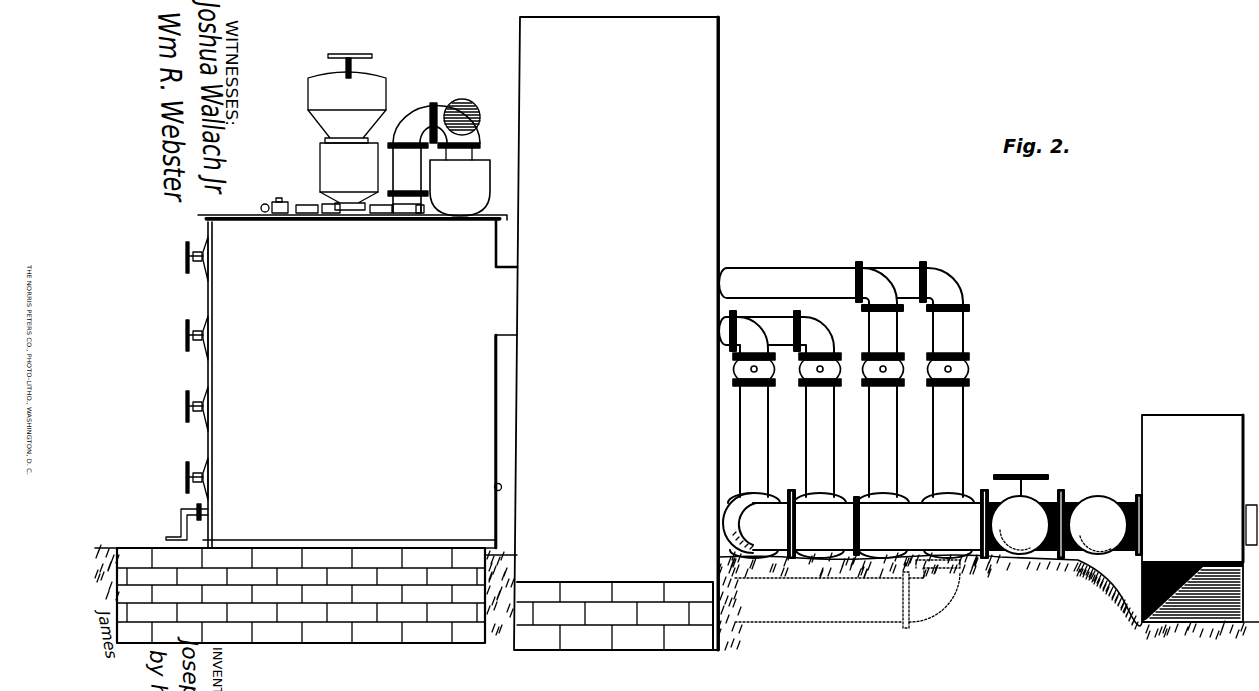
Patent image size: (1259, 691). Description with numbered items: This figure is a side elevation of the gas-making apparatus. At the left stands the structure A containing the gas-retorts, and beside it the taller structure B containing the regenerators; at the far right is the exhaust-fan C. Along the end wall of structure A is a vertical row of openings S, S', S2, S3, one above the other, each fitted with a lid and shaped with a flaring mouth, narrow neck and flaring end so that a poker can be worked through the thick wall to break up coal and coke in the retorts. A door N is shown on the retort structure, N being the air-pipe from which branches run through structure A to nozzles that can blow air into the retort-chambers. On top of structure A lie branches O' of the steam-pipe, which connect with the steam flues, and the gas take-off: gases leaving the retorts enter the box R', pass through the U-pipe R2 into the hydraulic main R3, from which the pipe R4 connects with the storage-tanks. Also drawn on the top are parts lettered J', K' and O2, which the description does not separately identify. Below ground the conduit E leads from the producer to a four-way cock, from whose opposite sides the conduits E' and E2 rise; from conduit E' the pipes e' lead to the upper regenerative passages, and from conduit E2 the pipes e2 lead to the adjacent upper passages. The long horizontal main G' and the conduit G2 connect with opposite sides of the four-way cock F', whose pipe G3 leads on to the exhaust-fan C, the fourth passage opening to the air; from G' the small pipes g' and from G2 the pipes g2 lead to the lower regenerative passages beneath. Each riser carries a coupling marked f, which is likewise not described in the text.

The structure containing the gas-retorts A is at (357, 381).
The structure containing the regenerators B is at (616, 333).
The exhaust-fan C is at (1199, 518).
The air-pipe N is at (506, 441).
The opening S is at (197, 260).
The opening S' is at (197, 338).
The opening S2 is at (197, 410).
The opening S3 is at (197, 480).
The hopper J' is at (347, 141).
The hopper gate handle K' is at (361, 66).
The box R' is at (381, 200).
The U-pipe R2 is at (434, 158).
The hydraulic main R3 is at (460, 179).
The pipe R4 is at (480, 124).
The steam-pipe branch O' is at (304, 200).
The cock O2 is at (281, 199).
The pipe e' is at (820, 379).
The pipe e2 is at (934, 379).
The small pipe g' is at (757, 404).
The pipe g2 is at (804, 404).
The union coupling f is at (927, 369).
The conduit G' is at (932, 519).
The conduit G2 is at (838, 497).
The pipe G3 is at (1103, 525).
The conduit E' is at (887, 519).
The conduit E2 is at (962, 497).
The four-way cock F' is at (1026, 505).
The conduit or pipe E is at (847, 605).